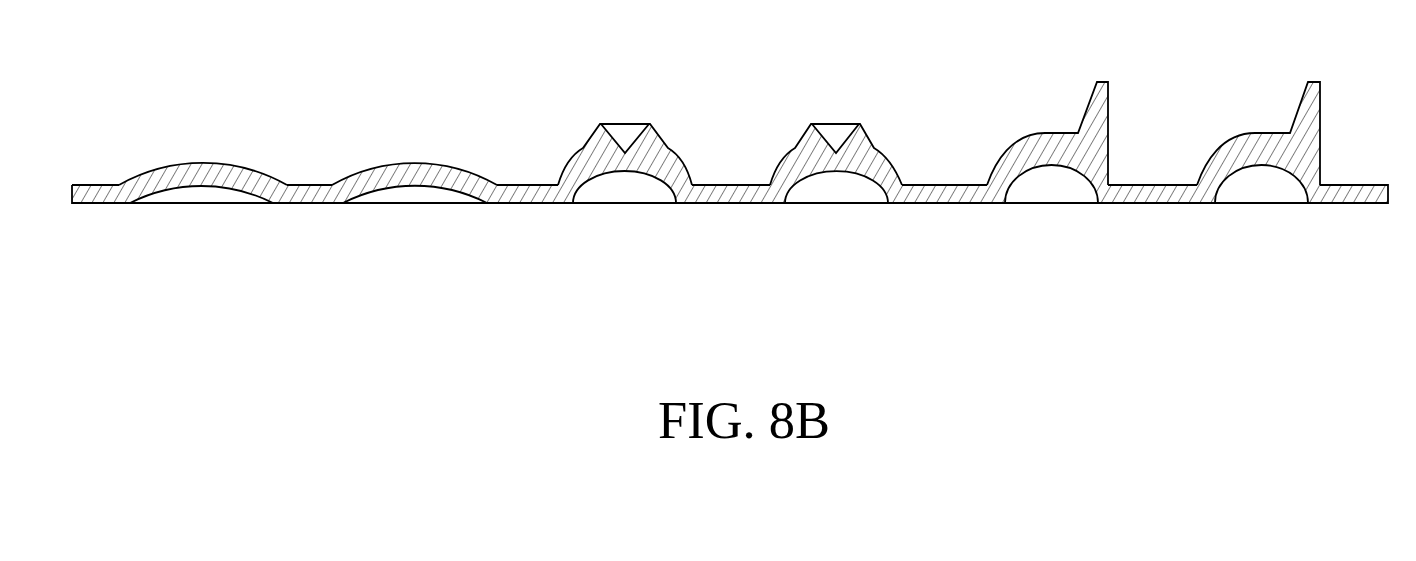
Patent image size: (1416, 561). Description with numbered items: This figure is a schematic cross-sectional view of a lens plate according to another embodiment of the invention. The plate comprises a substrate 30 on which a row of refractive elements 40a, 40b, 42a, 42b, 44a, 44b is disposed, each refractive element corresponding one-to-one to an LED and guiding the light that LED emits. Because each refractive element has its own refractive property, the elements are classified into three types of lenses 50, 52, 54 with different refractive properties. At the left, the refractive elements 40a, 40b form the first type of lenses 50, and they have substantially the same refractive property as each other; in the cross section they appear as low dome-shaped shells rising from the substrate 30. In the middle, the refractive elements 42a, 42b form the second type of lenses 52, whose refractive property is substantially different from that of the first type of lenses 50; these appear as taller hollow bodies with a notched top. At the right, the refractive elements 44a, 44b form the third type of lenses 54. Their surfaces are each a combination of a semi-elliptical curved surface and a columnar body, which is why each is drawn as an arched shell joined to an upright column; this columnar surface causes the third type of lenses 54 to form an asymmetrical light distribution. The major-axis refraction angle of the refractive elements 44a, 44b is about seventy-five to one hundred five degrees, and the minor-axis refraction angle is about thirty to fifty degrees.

The substrate 30 is at (1370, 193).
The refractive element 40a is at (227, 162).
The refractive element 40b is at (414, 146).
The refractive element 42a is at (637, 128).
The refractive element 42b is at (836, 131).
The refractive element 44a is at (1057, 158).
The refractive element 44b is at (1258, 174).
The first type of lenses 50 is at (308, 122).
The second type of lenses 52 is at (730, 106).
The third type of lenses 54 is at (1153, 197).